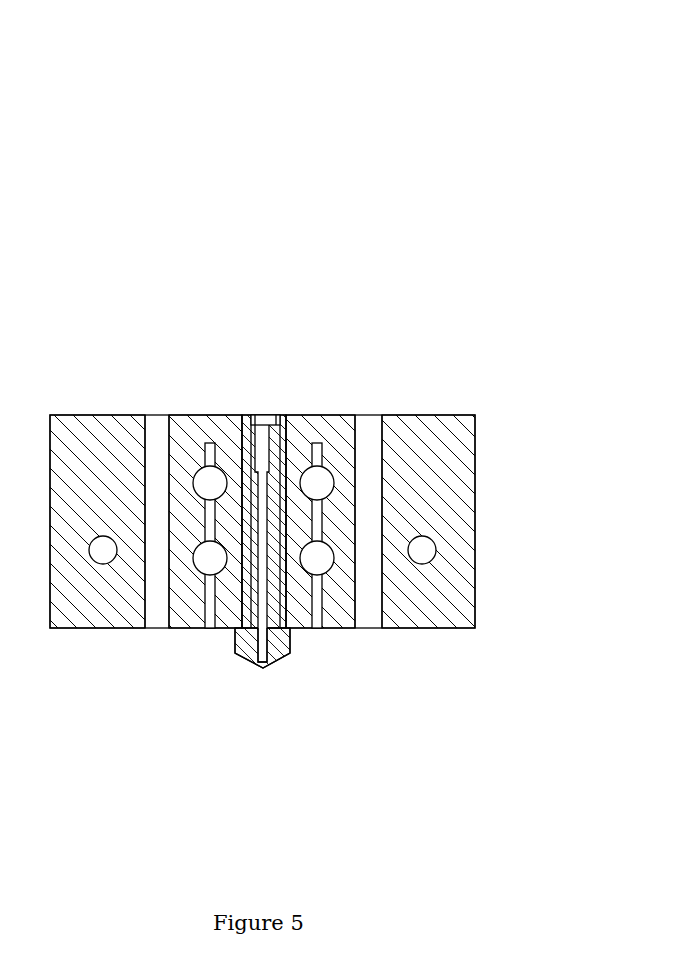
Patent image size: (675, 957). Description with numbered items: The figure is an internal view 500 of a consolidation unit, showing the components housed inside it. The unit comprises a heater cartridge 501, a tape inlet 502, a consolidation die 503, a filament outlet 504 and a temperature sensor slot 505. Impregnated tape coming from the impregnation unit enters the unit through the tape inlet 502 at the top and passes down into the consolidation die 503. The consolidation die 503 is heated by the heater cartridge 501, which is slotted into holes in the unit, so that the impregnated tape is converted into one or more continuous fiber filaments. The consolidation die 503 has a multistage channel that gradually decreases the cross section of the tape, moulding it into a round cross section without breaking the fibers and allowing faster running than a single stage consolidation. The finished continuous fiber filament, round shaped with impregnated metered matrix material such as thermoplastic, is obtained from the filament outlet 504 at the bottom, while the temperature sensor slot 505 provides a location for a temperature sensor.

The internal view 500 is at (440, 105).
The heater cartridge 501 is at (203, 452).
The tape inlet 502 is at (257, 415).
The consolidation die 503 is at (287, 453).
The filament outlet 504 is at (263, 669).
The temperature sensor slot 505 is at (368, 620).